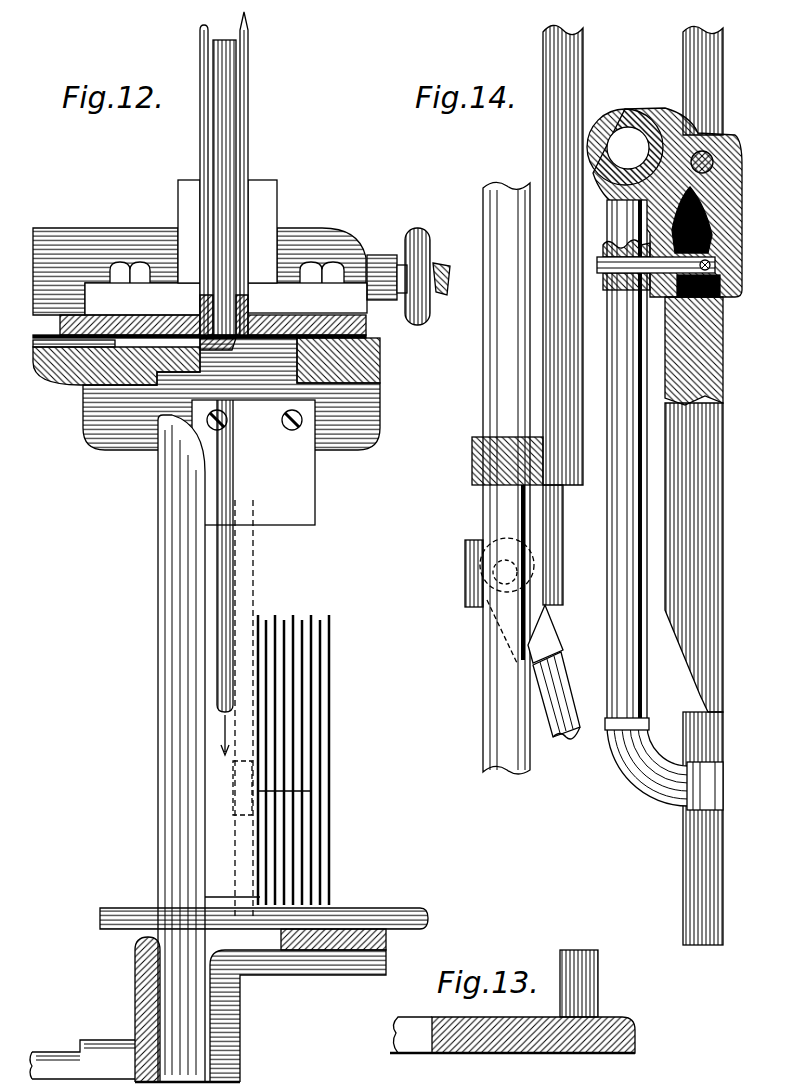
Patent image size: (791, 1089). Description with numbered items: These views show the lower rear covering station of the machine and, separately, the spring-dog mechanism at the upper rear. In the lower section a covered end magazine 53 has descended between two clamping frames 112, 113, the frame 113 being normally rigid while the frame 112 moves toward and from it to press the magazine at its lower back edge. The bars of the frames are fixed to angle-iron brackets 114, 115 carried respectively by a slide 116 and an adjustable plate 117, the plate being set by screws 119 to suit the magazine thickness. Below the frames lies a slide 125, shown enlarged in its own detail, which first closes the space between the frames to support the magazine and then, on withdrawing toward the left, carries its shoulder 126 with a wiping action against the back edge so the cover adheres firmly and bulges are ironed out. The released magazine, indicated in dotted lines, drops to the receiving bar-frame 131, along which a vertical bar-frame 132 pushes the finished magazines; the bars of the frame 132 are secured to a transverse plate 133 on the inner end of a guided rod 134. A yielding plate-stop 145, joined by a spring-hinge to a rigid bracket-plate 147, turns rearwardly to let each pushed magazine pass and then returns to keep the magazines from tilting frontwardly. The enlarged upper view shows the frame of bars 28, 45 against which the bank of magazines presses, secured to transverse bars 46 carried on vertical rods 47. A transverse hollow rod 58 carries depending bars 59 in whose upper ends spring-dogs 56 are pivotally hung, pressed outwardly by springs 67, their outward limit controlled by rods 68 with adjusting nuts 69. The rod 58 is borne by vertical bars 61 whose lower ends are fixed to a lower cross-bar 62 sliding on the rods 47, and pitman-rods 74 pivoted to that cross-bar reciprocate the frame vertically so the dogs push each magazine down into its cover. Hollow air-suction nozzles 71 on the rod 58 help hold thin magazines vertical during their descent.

In FIG. 12, the end magazine 53 is at (228, 116).
In FIG. 12, the movable clamping frame 112 is at (205, 133).
In FIG. 12, the rigid clamping frame 113 is at (248, 145).
In FIG. 12, the angle-iron bracket 114 is at (178, 198).
In FIG. 12, the angle-iron bracket 115 is at (277, 210).
In FIG. 12, the slide 116 is at (133, 320).
In FIG. 12, the adjustable plate 117 is at (307, 300).
In FIG. 12, the adjusting screw 119 is at (445, 268).
In FIG. 12, the slide 125 is at (174, 343).
In FIG. 13, the slide 125 is at (512, 1051).
In FIG. 12, the shoulder 126 is at (228, 347).
In FIG. 13, the shoulder 126 is at (632, 1007).
In FIG. 12, the bracket-plate 147 is at (303, 517).
In FIG. 12, the plate-stop 145 is at (258, 588).
In FIG. 12, the vertical bar-frame 132 is at (158, 806).
In FIG. 12, the receiving bar-frame 131 is at (414, 908).
In FIG. 12, the transverse plate 133 is at (135, 976).
In FIG. 12, the rod 134 is at (58, 1052).
In FIG. 14, the vertical bar 45 is at (583, 58).
In FIG. 14, the bar 28 is at (723, 85).
In FIG. 14, the transverse rod 58 is at (634, 133).
In FIG. 14, the spring 67 is at (710, 230).
In FIG. 14, the spring-dog 56 is at (717, 262).
In FIG. 14, the adjusting nut 69 is at (605, 246).
In FIG. 14, the rod 68 is at (603, 278).
In FIG. 14, the vertical rod 47 is at (483, 398).
In FIG. 14, the transverse bar 46 is at (472, 462).
In FIG. 14, the vertical bar 61 is at (560, 520).
In FIG. 14, the lower cross-bar 62 is at (465, 547).
In FIG. 14, the depending bar 59 is at (723, 513).
In FIG. 14, the air-suction nozzle 71 is at (612, 668).
In FIG. 14, the pitman-rod 74 is at (567, 740).